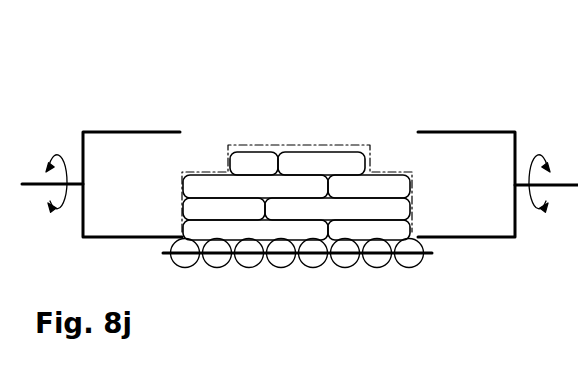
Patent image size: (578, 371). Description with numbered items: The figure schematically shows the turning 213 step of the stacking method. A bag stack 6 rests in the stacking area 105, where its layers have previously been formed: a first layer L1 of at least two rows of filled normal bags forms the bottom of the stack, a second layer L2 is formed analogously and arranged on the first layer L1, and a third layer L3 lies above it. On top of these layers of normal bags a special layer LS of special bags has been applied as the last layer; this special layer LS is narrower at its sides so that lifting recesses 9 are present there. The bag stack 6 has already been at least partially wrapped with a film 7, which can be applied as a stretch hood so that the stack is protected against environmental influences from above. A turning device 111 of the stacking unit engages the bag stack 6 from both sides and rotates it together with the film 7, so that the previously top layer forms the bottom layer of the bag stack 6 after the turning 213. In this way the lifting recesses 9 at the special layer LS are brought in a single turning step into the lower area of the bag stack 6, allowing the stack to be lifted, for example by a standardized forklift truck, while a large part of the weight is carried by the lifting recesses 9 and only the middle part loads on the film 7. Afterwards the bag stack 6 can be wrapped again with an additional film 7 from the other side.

The turning 213 is at (146, 60).
The turning device 111 is at (95, 132).
The bag stack 6 is at (211, 131).
The lifting recesses 9 is at (213, 169).
The film 7 is at (410, 223).
The special layer LS is at (336, 166).
The third layer L3 is at (182, 185).
The second layer L2 is at (407, 206).
The first layer L1 is at (184, 226).
The stacking area 105 is at (158, 256).